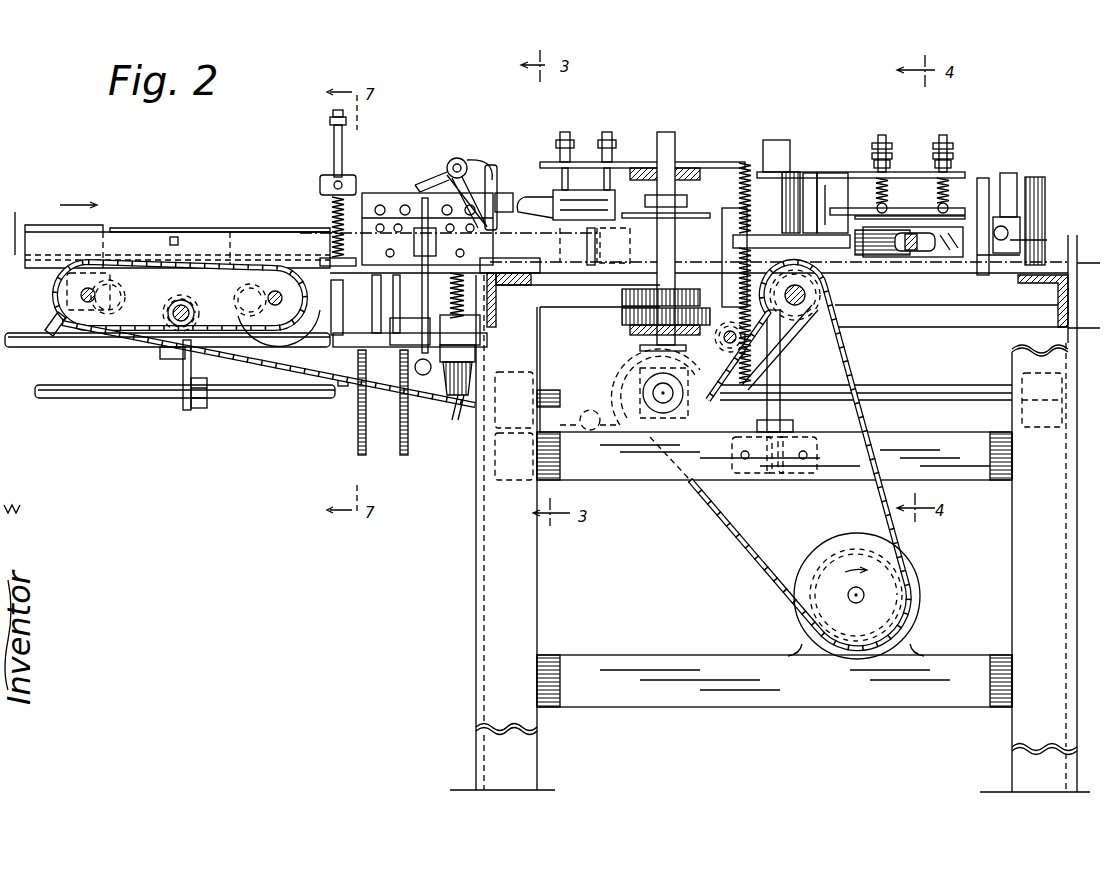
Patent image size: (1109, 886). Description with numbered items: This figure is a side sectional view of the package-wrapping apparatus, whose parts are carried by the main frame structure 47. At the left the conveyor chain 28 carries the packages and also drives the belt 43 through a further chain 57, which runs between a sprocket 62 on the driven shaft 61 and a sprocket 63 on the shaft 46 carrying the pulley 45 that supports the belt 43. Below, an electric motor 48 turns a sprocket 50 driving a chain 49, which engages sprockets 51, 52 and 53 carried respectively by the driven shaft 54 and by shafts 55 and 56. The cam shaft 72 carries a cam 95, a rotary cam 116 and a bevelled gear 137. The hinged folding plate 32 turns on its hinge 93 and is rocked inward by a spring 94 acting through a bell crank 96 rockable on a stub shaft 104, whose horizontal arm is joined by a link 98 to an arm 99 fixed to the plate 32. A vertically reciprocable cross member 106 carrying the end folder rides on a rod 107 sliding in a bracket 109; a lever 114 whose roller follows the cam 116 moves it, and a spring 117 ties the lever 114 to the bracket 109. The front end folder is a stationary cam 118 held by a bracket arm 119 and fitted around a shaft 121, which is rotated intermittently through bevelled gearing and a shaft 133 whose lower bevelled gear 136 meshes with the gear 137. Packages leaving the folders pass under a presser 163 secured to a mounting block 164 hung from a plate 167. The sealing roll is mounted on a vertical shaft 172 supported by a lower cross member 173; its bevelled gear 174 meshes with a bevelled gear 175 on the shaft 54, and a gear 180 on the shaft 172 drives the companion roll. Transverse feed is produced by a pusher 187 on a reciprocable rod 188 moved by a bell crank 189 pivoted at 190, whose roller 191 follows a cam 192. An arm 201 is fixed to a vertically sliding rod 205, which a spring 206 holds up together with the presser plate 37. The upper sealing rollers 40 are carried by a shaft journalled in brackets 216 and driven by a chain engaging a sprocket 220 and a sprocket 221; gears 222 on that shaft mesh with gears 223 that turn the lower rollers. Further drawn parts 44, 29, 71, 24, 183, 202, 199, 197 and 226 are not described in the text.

The belt 43 is at (168, 232).
The guide 44 is at (240, 228).
The chain 57 is at (130, 262).
The driven shaft 61 is at (80, 294).
The sprocket 62 is at (120, 297).
The sprocket 63 is at (240, 294).
The shaft 46 is at (198, 310).
The shaft 29 is at (48, 320).
The rod 71 is at (96, 348).
The cam shaft 72 is at (135, 398).
The pulley 45 is at (268, 343).
The conveyor chain 28 is at (292, 360).
The cross member 106 is at (330, 121).
The rod 107 is at (334, 136).
The spring 117 is at (320, 190).
The bracket 109 is at (365, 193).
The folding plate 32 is at (380, 205).
The hinge 93 is at (398, 224).
The arm 99 is at (418, 205).
The lever 24 is at (440, 170).
The shaft 121 is at (462, 158).
The bracket arm 119 is at (480, 160).
The stationary cam 118 is at (497, 180).
The presser 163 is at (530, 205).
The mounting block 164 is at (584, 227).
The plate 167 is at (568, 140).
The shaft 172 is at (657, 150).
The plate 183 is at (680, 218).
The shaft 133 is at (510, 256).
The stub shaft 104 is at (550, 352).
The bell crank 96 is at (385, 333).
The lever 114 is at (404, 351).
The rotary cam 116 is at (358, 440).
The cam 95 is at (406, 445).
The bevelled gear 136 is at (475, 352).
The spring 94 is at (428, 378).
The bevelled gear 137 is at (456, 422).
The main frame structure 47 is at (476, 525).
The link 98 is at (420, 280).
The cam 192 is at (622, 295).
The gear 180 is at (622, 316).
The lower cross member 173 is at (640, 345).
The driven shaft 54 is at (660, 400).
The bevelled gear 174 is at (648, 376).
The bevelled gear 175 is at (628, 368).
The sprocket 221 is at (590, 429).
The sprocket 51 is at (690, 420).
The sprocket 52 is at (726, 348).
The sprocket 53 is at (828, 295).
The shaft 56 is at (780, 347).
The shaft 55 is at (770, 345).
The rod 205 is at (781, 385).
The chain 49 is at (715, 503).
The sprocket 50 is at (830, 562).
The electric motor 48 is at (905, 572).
The sprocket 220 is at (618, 247).
The gears 222 is at (745, 163).
The spring 206 is at (740, 200).
The gears 223 is at (808, 163).
The journal housings 216 is at (812, 172).
The arm 201 is at (835, 173).
The upper roller 40 is at (878, 160).
The nut 202 is at (943, 140).
The presser plate 37 is at (912, 208).
The pivot 190 is at (740, 235).
The roller 191 is at (722, 248).
The bell crank 189 is at (880, 256).
The rod 188 is at (915, 252).
The pusher 187 is at (948, 258).
The pin 199 is at (1001, 240).
The block 197 is at (1020, 232).
The bed 226 is at (940, 329).